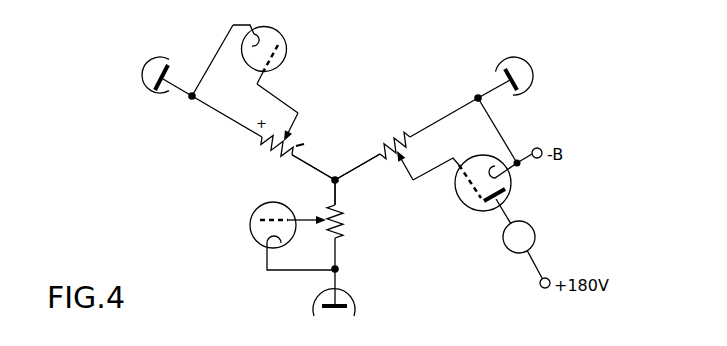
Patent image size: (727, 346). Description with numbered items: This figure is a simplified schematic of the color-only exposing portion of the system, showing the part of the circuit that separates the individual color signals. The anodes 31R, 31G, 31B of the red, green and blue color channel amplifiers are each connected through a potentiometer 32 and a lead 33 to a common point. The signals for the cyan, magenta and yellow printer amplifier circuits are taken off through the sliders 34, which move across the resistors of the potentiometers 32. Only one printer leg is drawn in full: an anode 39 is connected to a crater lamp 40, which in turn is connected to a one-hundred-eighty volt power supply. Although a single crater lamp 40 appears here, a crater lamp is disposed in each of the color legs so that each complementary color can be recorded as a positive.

The anode of red color channel amplifier 31R is at (158, 74).
The anode of green color channel amplifier 31G is at (522, 83).
The anode of blue color channel amplifier 31B is at (343, 308).
The potentiometer 32 is at (278, 154).
The lead 33 is at (356, 161).
The slider 34 is at (297, 122).
The anode 39 is at (506, 193).
The crater lamp 40 is at (537, 238).